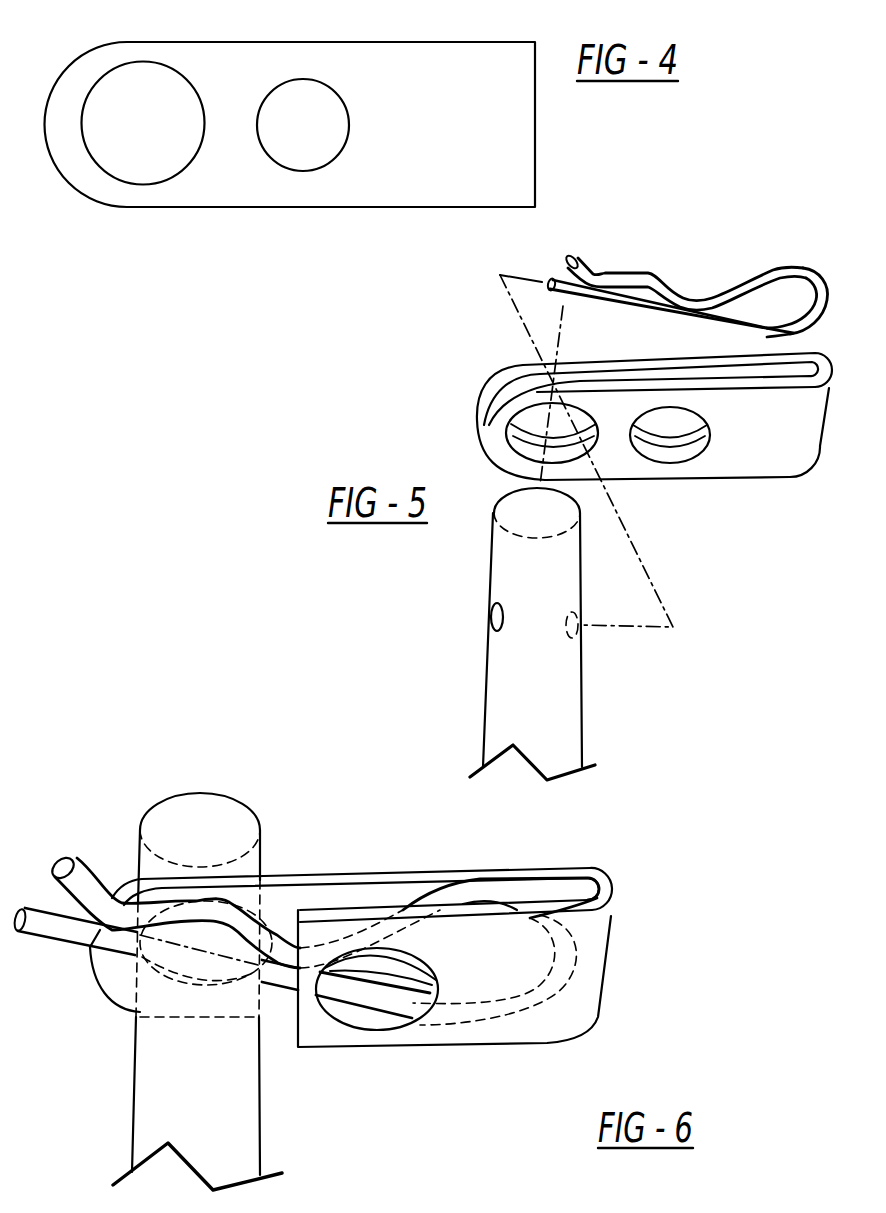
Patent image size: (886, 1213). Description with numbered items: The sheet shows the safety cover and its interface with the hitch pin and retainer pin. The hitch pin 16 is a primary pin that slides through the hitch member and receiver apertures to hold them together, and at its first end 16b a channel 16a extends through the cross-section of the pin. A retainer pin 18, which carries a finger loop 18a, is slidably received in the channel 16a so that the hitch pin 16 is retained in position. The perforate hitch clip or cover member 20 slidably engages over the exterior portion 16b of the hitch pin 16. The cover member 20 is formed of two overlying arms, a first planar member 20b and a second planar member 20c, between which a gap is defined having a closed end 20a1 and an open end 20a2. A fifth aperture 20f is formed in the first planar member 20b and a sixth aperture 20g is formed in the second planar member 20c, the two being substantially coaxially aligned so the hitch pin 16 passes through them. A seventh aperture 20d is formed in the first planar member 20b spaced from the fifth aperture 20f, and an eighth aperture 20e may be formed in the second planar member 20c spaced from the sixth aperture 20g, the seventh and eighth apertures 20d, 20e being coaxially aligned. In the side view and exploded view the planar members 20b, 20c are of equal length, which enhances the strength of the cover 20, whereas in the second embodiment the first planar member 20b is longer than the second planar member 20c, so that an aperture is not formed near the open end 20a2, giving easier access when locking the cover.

In FIG. 5, the hitch pin 16 is at (531, 634).
In FIG. 6, the hitch pin 16 is at (262, 856).
In FIG. 5, the channel 16a is at (494, 614).
In FIG. 5, the first end 16b is at (492, 556).
In FIG. 5, the retainer pin 18 is at (687, 261).
In FIG. 6, the retainer pin 18 is at (306, 927).
In FIG. 5, the finger loop 18a is at (787, 293).
In FIG. 6, the finger loop 18a is at (537, 983).
In FIG. 4, the cover member 20 is at (413, 40).
In FIG. 5, the cover member 20 is at (654, 416).
In FIG. 6, the cover member 20 is at (384, 993).
In FIG. 6, the closed end 20a1 is at (616, 930).
In FIG. 6, the open end 20a2 is at (278, 1005).
In FIG. 6, the first planar member 20b is at (567, 1024).
In FIG. 6, the second planar member 20c is at (543, 865).
In FIG. 4, the seventh aperture 20d is at (143, 179).
In FIG. 5, the seventh aperture 20d is at (552, 433).
In FIG. 4, the eighth aperture 20e is at (110, 180).
In FIG. 5, the eighth aperture 20e is at (552, 433).
In FIG. 6, the eighth aperture 20e is at (180, 982).
In FIG. 4, the fifth aperture 20f is at (297, 187).
In FIG. 5, the fifth aperture 20f is at (670, 435).
In FIG. 6, the fifth aperture 20f is at (377, 1045).
In FIG. 4, the sixth aperture 20g is at (283, 168).
In FIG. 5, the sixth aperture 20g is at (670, 435).
In FIG. 6, the sixth aperture 20g is at (364, 1026).